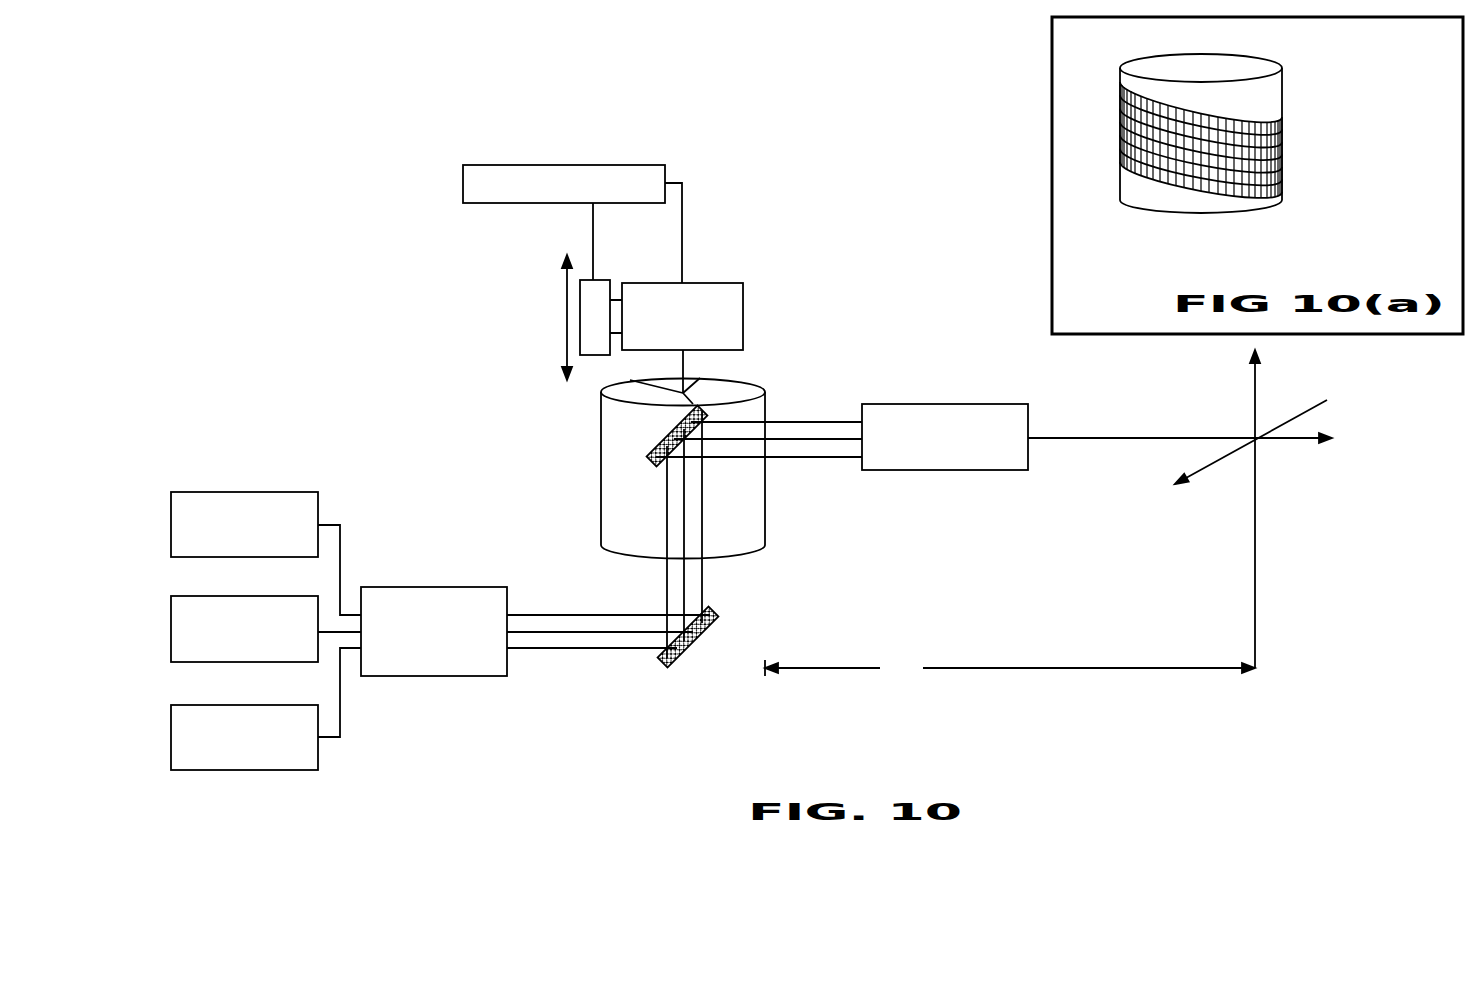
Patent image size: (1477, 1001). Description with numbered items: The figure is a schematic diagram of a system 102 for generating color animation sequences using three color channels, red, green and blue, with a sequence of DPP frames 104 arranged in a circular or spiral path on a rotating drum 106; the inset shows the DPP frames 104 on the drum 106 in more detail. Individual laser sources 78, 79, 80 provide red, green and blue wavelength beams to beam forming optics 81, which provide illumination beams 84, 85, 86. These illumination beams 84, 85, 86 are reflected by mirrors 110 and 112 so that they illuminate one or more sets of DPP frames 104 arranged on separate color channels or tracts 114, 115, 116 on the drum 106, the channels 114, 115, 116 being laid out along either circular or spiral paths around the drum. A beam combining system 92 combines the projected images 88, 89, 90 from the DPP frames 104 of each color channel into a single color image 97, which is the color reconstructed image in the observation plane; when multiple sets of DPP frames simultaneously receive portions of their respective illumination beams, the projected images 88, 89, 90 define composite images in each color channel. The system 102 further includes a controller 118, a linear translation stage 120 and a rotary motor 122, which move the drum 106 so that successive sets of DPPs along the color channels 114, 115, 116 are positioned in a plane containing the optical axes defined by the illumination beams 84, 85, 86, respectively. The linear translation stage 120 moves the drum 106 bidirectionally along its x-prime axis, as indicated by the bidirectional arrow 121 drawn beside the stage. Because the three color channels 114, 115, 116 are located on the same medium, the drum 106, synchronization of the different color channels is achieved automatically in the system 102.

In FIG. 10, the system 102 is at (862, 219).
In FIG. 10, the controller 118 is at (463, 185).
In FIG. 10, the linear translation stage 120 is at (593, 357).
In FIG. 10, the translation direction arrow 121 is at (567, 320).
In FIG. 10, the rotary motor 122 is at (743, 303).
In FIG. 10, the drum 106 is at (601, 497).
In FIG. 10a, the drum 106 is at (1141, 58).
In FIG. 10, the mirror 112 is at (670, 428).
In FIG. 10, the illumination beam 84 is at (740, 422).
In FIG. 10, the illumination beam 85 is at (748, 441).
In FIG. 10, the illumination beam 86 is at (720, 459).
In FIG. 10, the projected image 88 is at (836, 424).
In FIG. 10, the projected image 89 is at (833, 441).
In FIG. 10, the projected image 90 is at (786, 459).
In FIG. 10, the mirror 110 is at (706, 636).
In FIG. 10, the beam combining system 92 is at (928, 470).
In FIG. 10, the single color image 97 is at (1070, 440).
In FIG. 10, the laser source 78 is at (171, 523).
In FIG. 10, the laser source 79 is at (171, 628).
In FIG. 10, the laser source 80 is at (171, 737).
In FIG. 10, the beam forming optics 81 is at (415, 587).
In FIG. 10a, the DPP frames 104 is at (1152, 168).
In FIG. 10a, the color channel 114 is at (1283, 122).
In FIG. 10a, the color channel 115 is at (1283, 133).
In FIG. 10a, the color channel 116 is at (1283, 145).